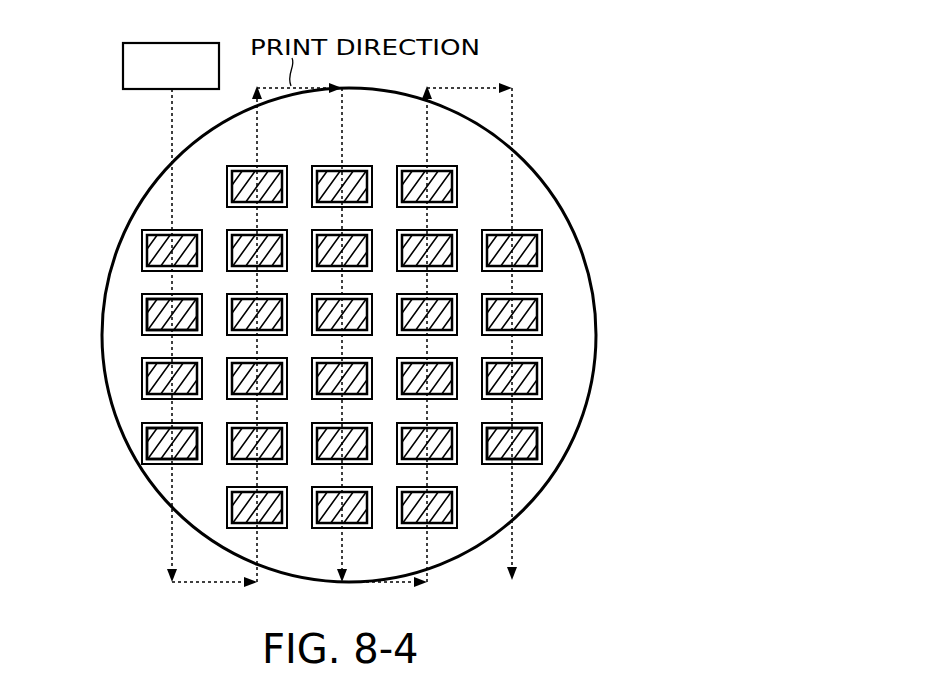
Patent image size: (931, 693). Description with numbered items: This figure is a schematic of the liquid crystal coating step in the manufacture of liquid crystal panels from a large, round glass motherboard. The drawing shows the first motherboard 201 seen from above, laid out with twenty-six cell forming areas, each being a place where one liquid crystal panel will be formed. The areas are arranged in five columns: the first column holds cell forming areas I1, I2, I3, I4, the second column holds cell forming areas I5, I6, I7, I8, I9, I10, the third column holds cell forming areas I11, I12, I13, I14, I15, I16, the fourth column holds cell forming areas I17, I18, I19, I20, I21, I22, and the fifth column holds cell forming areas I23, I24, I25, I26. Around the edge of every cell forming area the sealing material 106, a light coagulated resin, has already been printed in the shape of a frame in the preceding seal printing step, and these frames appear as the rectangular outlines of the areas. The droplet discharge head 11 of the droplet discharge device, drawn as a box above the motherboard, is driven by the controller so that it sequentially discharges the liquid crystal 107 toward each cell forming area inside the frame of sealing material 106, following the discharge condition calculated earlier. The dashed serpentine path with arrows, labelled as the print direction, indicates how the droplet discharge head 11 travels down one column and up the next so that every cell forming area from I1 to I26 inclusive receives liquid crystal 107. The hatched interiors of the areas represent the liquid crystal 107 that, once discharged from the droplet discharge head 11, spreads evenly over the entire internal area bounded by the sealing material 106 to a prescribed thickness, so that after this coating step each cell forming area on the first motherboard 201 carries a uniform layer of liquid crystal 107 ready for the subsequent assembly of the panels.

The droplet discharge head 11 is at (180, 43).
The first motherboard 201 is at (548, 184).
The sealing material 106 is at (350, 382).
The liquid crystal 107 is at (152, 317).
The cell forming area I1 is at (183, 230).
The cell forming area I2 is at (183, 294).
The cell forming area I3 is at (183, 358).
The cell forming area I4 is at (183, 423).
The cell forming area I5 is at (268, 166).
The cell forming area I6 is at (268, 230).
The cell forming area I7 is at (268, 294).
The cell forming area I8 is at (268, 358).
The cell forming area I9 is at (268, 423).
The cell forming area I10 is at (268, 487).
The cell forming area I11 is at (353, 166).
The cell forming area I12 is at (353, 230).
The cell forming area I13 is at (353, 294).
The cell forming area I14 is at (353, 358).
The cell forming area I15 is at (353, 423).
The cell forming area I16 is at (353, 487).
The cell forming area I17 is at (438, 166).
The cell forming area I18 is at (438, 230).
The cell forming area I19 is at (438, 294).
The cell forming area I20 is at (438, 358).
The cell forming area I21 is at (438, 423).
The cell forming area I22 is at (438, 487).
The cell forming area I23 is at (523, 230).
The cell forming area I24 is at (523, 294).
The cell forming area I25 is at (523, 358).
The cell forming area I26 is at (523, 423).